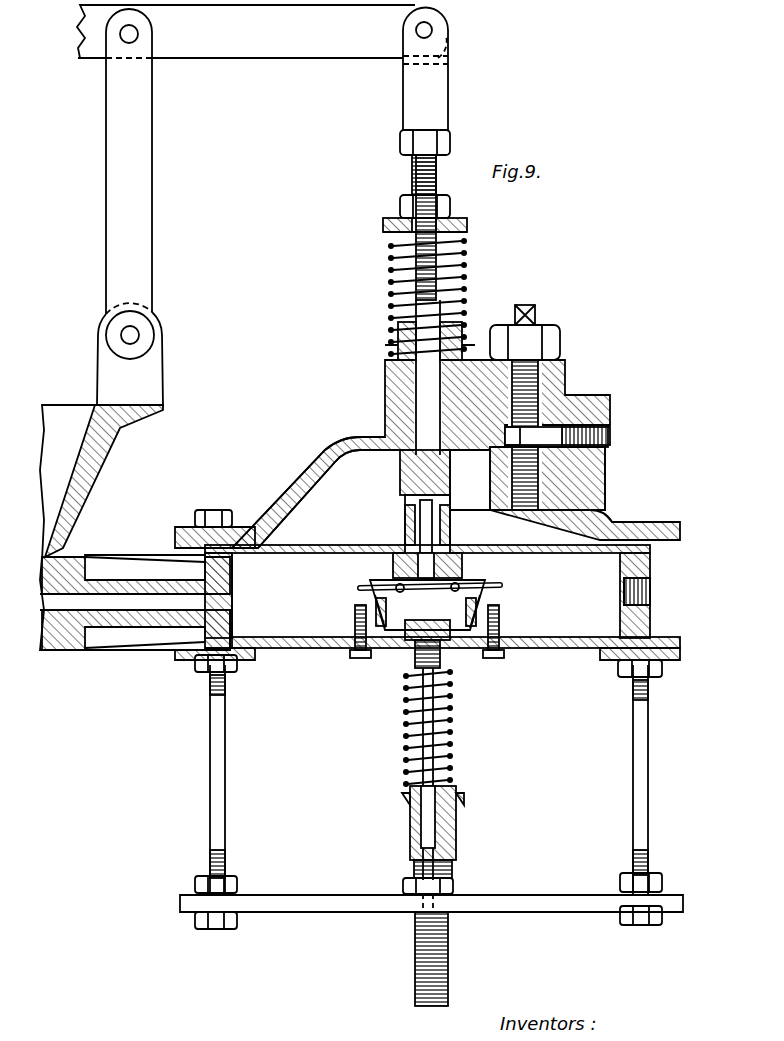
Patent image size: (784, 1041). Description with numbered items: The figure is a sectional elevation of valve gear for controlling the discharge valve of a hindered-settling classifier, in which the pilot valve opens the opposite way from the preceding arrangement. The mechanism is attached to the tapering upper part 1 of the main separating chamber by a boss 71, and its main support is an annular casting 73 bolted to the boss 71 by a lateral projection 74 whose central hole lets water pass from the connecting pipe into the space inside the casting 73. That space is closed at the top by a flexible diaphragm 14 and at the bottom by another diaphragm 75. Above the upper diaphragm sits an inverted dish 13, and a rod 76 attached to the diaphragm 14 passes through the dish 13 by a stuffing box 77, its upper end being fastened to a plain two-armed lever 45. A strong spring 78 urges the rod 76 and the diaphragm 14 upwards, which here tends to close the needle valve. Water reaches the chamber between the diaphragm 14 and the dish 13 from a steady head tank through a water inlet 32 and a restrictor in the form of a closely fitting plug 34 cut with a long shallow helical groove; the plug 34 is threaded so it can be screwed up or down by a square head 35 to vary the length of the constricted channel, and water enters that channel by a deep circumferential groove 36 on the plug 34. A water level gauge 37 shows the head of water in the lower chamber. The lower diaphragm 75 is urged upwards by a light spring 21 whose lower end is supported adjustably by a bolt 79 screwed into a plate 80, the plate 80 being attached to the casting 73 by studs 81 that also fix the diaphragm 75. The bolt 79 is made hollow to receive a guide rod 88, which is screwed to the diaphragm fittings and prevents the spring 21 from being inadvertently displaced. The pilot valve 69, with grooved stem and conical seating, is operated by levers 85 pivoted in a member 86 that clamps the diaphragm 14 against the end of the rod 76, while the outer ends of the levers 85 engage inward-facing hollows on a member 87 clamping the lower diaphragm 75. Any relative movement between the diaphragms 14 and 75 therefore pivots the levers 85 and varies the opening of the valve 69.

The tapering upper part 1 is at (76, 494).
The inverted dish 13 is at (312, 478).
The flexible diaphragm 14 is at (312, 545).
The spring 21 is at (404, 742).
The water inlet 32 is at (609, 437).
The plug 34 is at (527, 512).
The square head 35 is at (536, 320).
The circumferential groove 36 is at (492, 449).
The water level gauge 37 is at (662, 595).
The two-armed lever 45 is at (266, 52).
The pilot valve 69 is at (402, 640).
The boss 71 is at (57, 650).
The annular casting 73 is at (248, 650).
The lateral projection 74 is at (150, 628).
The diaphragm 75 is at (292, 640).
The rod 76 is at (400, 300).
The stuffing box 77 is at (400, 412).
The strong spring 78 is at (392, 268).
The bolt 79 is at (452, 830).
The plate 80 is at (530, 896).
The studs 81 is at (220, 818).
The levers 85 is at (370, 585).
The member 86 is at (374, 547).
The member 87 is at (352, 620).
The guide rod 88 is at (430, 718).